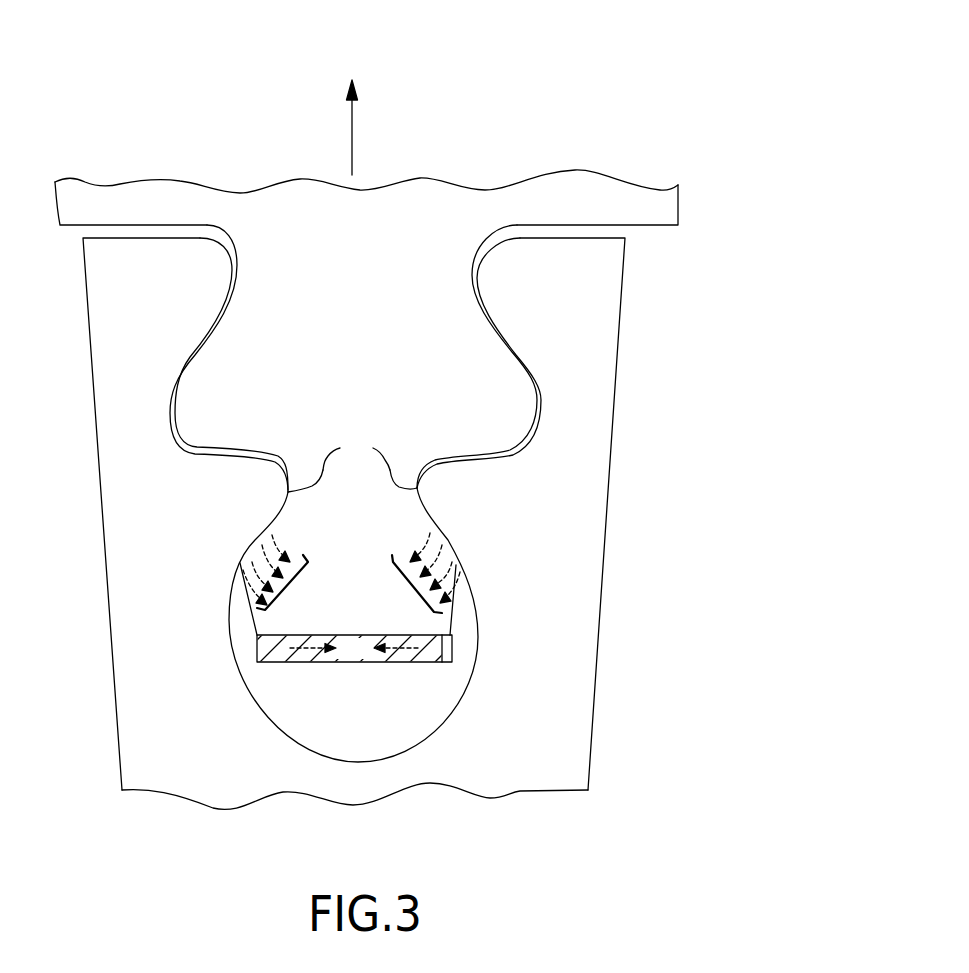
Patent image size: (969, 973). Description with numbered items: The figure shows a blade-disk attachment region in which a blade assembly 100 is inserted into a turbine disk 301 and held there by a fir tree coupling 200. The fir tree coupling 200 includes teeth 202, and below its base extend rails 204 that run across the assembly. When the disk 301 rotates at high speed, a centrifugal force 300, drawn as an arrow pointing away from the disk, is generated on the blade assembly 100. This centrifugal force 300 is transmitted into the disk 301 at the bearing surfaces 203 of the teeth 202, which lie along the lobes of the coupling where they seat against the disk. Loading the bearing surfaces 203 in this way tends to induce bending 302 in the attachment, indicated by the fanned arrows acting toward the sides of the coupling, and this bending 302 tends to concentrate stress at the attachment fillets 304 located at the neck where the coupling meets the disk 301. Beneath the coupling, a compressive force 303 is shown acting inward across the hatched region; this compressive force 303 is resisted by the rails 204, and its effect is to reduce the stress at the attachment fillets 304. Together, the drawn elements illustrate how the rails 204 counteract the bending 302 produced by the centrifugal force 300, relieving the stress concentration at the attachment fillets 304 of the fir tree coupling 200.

The blade assembly 100 is at (542, 77).
The fir tree coupling 200 is at (371, 389).
The teeth 202 is at (495, 398).
The bearing surfaces 203 is at (512, 352).
The rails 204 is at (448, 663).
The centrifugal force 300 is at (352, 145).
The turbine disk 301 is at (198, 519).
The bending 302 is at (287, 588).
The compressive force 303 is at (348, 648).
The attachment fillets 304 is at (356, 445).